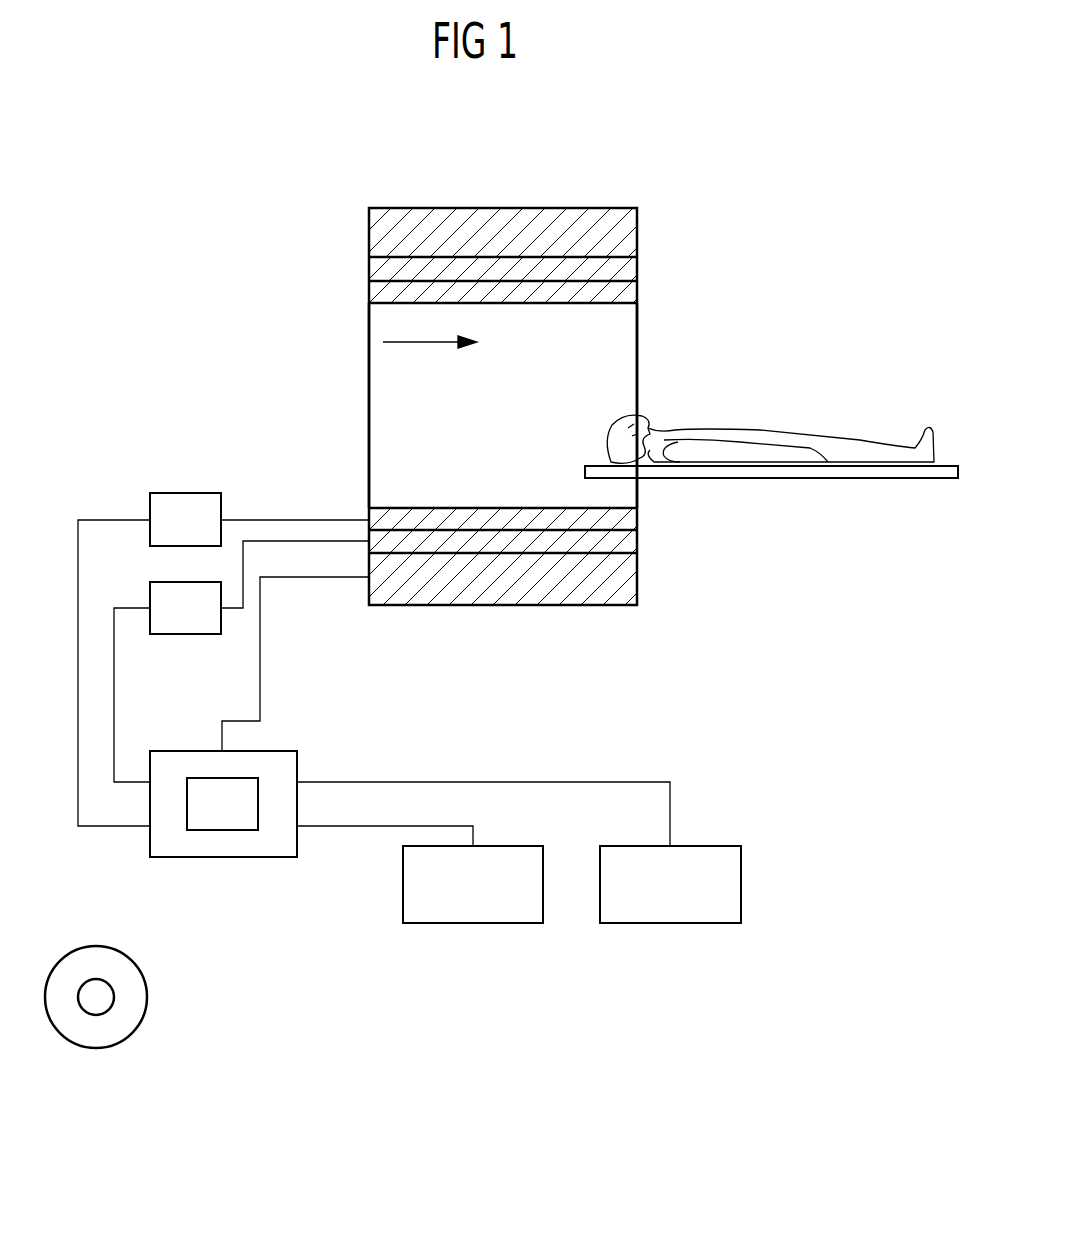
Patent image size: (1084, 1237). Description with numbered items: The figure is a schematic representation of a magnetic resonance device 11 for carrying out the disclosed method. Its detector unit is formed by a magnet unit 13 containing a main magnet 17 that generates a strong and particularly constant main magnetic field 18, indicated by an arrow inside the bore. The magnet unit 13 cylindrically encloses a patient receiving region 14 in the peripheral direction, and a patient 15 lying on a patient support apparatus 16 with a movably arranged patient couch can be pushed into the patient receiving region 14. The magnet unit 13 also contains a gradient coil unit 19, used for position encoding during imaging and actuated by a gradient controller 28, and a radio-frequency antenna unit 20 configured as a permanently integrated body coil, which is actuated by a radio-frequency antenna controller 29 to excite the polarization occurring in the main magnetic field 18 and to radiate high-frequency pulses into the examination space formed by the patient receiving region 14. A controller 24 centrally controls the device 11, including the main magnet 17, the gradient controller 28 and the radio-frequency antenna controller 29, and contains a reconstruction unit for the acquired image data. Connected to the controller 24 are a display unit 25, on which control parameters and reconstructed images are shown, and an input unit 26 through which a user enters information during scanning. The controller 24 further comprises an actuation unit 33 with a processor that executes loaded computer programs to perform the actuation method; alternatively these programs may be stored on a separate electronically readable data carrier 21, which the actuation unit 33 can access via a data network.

The magnetic resonance device 11 is at (805, 305).
The magnet unit 13 is at (387, 190).
The patient receiving region 14 is at (600, 362).
The patient 15 is at (847, 447).
The patient support apparatus 16 is at (900, 480).
The main magnet 17 is at (627, 233).
The main magnetic field 18 is at (418, 344).
The gradient coil unit 19 is at (627, 270).
The radio-frequency antenna unit 20 is at (627, 291).
The electronically readable data carrier 21 is at (148, 997).
The controller 24 is at (222, 858).
The display unit 25 is at (473, 924).
The input unit 26 is at (670, 924).
The gradient controller 28 is at (185, 635).
The radio-frequency antenna controller 29 is at (185, 492).
The actuation unit 33 is at (259, 803).